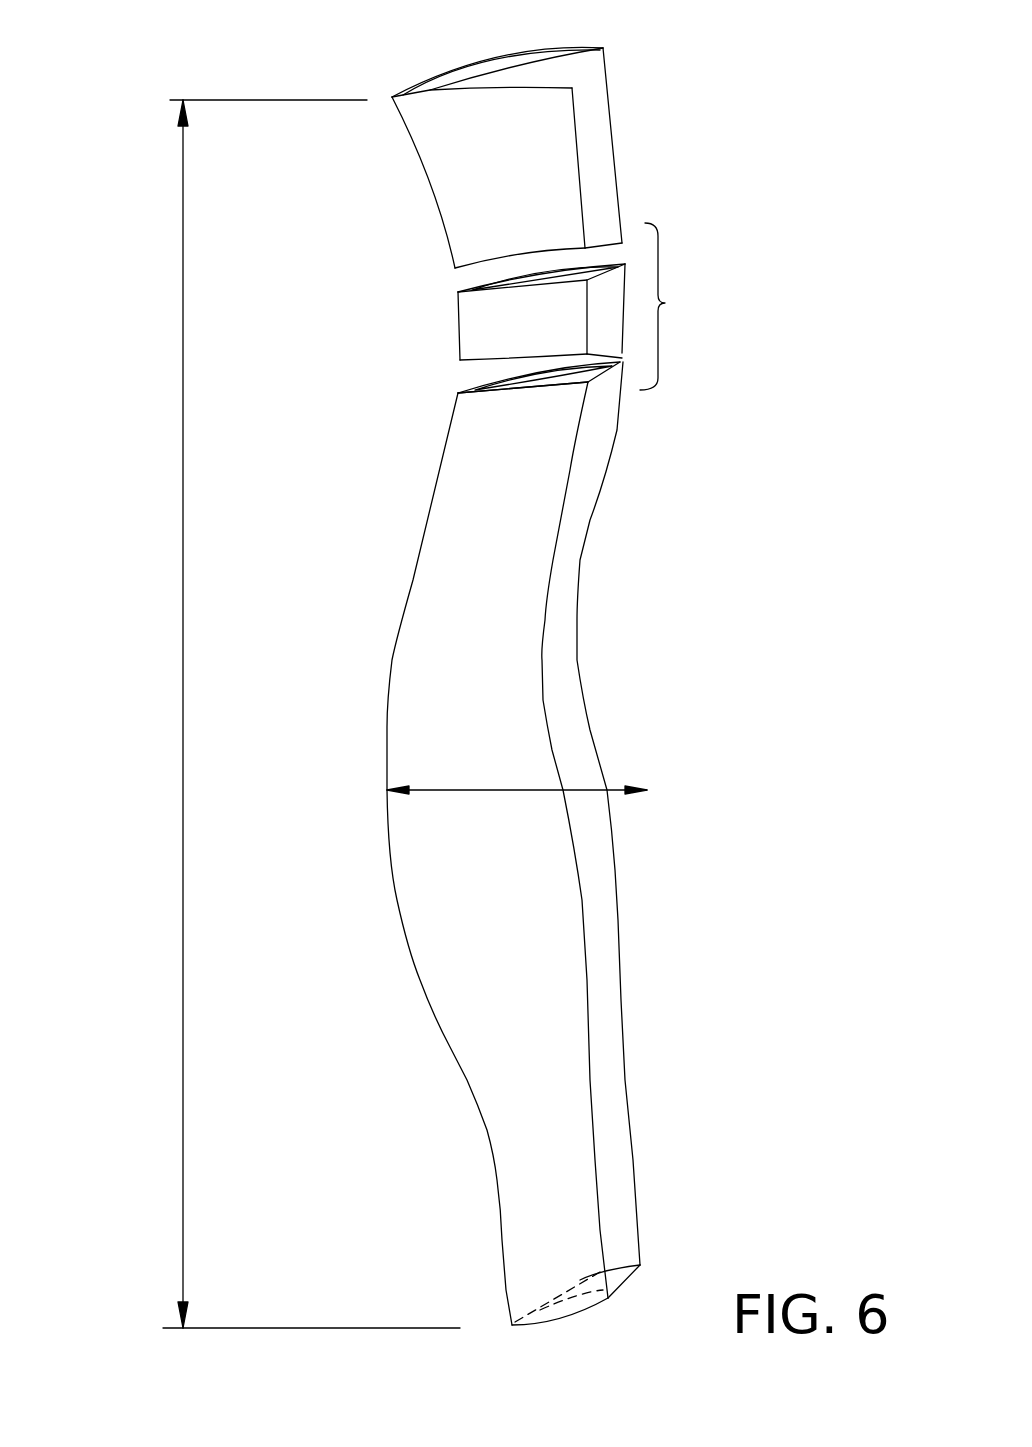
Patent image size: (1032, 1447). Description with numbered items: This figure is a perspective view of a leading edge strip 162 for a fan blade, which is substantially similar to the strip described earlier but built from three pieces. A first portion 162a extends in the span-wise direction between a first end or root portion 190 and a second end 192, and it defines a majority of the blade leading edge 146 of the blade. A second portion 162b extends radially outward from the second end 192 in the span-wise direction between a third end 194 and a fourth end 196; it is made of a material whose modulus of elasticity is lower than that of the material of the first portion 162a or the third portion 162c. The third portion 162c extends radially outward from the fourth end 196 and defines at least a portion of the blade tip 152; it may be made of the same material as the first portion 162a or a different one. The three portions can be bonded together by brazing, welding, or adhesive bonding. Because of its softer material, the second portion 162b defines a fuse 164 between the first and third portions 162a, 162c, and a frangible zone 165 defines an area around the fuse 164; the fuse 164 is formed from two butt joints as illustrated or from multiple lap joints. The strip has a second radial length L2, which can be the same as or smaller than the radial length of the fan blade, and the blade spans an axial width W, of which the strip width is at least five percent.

The leading edge strip 162 is at (360, 88).
The first portion 162a is at (528, 892).
The second portion 162b is at (556, 330).
The third portion 162c is at (549, 195).
The blade tip 152 is at (547, 55).
The fuse 164 is at (440, 320).
The frangible zone 165 is at (665, 303).
The fourth end 196 is at (473, 288).
The third end 194 is at (530, 363).
The second end 192 is at (530, 390).
The root portion 190 is at (573, 1312).
The blade leading edge 146 is at (387, 728).
The axial width W is at (492, 793).
The second radial length L2 is at (183, 740).